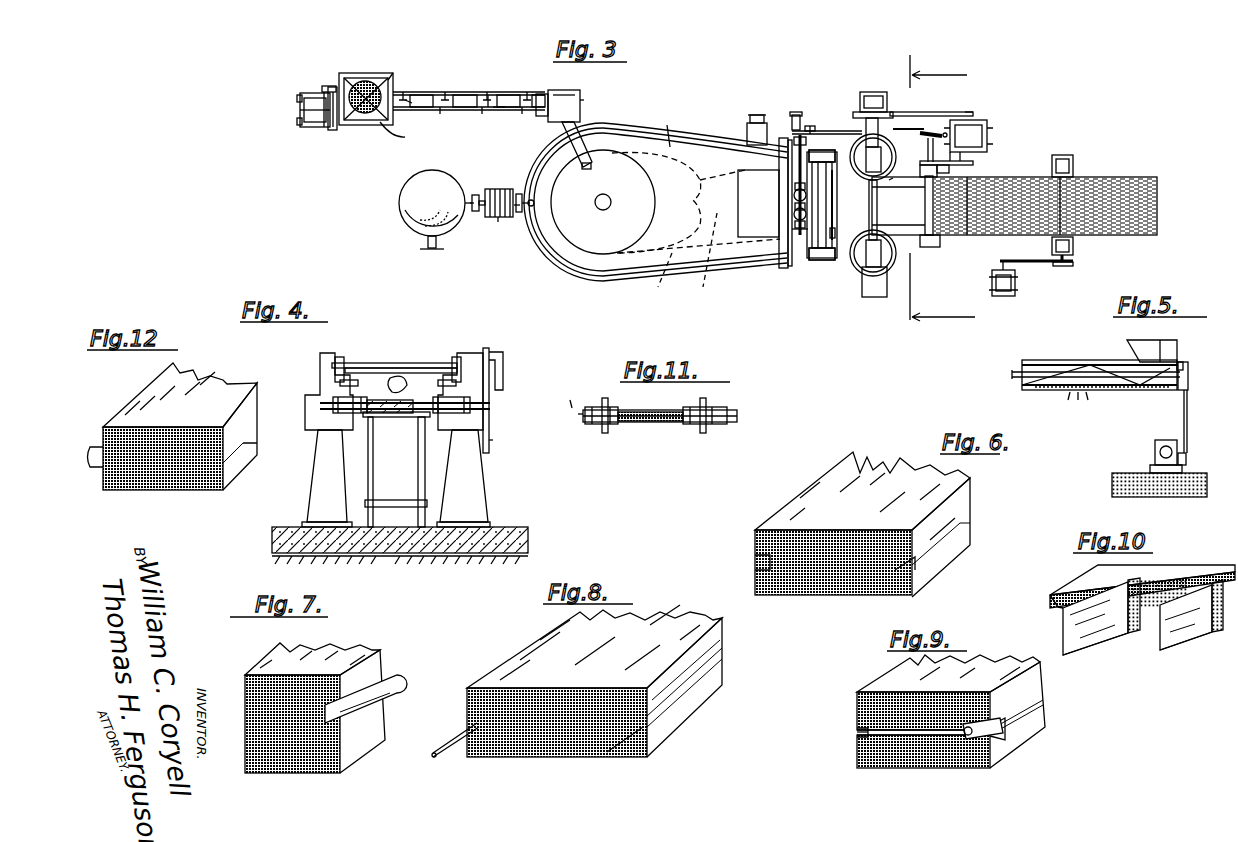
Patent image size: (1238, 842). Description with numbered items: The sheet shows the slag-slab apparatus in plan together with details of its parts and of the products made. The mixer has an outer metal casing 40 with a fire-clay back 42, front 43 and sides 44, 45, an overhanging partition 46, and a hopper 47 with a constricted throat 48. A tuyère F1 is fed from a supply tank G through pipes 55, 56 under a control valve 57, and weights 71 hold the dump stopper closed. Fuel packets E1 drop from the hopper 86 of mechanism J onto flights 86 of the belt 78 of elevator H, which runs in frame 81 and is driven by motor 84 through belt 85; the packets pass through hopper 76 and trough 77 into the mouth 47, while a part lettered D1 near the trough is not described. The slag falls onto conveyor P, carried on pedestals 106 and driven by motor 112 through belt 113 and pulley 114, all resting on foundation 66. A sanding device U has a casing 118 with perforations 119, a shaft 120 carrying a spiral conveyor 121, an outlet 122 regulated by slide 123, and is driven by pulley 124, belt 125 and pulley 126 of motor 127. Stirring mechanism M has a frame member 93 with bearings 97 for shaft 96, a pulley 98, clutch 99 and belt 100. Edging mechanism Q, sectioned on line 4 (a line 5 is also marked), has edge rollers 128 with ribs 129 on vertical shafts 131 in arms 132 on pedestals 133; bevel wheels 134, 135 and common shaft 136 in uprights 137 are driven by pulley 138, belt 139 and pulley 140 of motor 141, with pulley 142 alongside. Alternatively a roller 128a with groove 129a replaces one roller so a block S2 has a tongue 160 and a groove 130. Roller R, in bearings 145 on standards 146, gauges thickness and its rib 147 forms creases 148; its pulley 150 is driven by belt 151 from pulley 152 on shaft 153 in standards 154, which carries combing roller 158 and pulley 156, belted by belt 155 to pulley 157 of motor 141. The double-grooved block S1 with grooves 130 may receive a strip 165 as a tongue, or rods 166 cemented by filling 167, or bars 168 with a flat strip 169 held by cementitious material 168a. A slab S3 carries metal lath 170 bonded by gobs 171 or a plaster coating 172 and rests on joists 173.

In FIG. 3, the electric motor 84 is at (313, 128).
In FIG. 3, the belt 85 is at (329, 86).
In FIG. 3, the hopper mechanism J is at (368, 73).
In FIG. 3, the flights 86 is at (380, 82).
In FIG. 3, the elevator H is at (450, 91).
In FIG. 3, the belt 78 is at (490, 93).
In FIG. 3, the supporting frame 81 is at (492, 111).
In FIG. 3, the fuel packets E1 is at (421, 100).
In FIG. 3, the feed chute housing D' D1 is at (580, 92).
In FIG. 3, the hopper 76 is at (585, 100).
In FIG. 3, the trough 77 is at (592, 143).
In FIG. 3, the supply tank G is at (435, 209).
In FIG. 3, the pipe 56 is at (486, 192).
In FIG. 3, the pipe 55 is at (501, 189).
In FIG. 3, the weights 71 is at (500, 218).
In FIG. 3, the control valve 57 is at (477, 212).
In FIG. 3, the tuyère F1 is at (524, 222).
In FIG. 3, the outer metal casing 40 is at (612, 281).
In FIG. 3, the back 42 is at (557, 248).
In FIG. 3, the hopper 47 is at (636, 191).
In FIG. 3, the constricted throat 48 is at (600, 210).
In FIG. 3, the overhanging partition 46 is at (685, 190).
In FIG. 3, the front 43 is at (711, 255).
In FIG. 3, the side 45 is at (659, 280).
In FIG. 3, the side 44 is at (668, 127).
In FIG. 3, the sanding device U is at (746, 134).
In FIG. 5, the sanding device U is at (1050, 360).
In FIG. 3, the section line 5- 5 is at (787, 195).
In FIG. 3, the horizontal shaft 96 is at (797, 160).
In FIG. 3, the bearings 97 is at (797, 178).
In FIG. 3, the stirring mechanism M is at (794, 193).
In FIG. 3, the frame member 93 is at (794, 201).
In FIG. 3, the transverse roller R is at (837, 196).
In FIG. 3, the longitudinal rib 147 is at (837, 220).
In FIG. 3, the standards 146 is at (847, 233).
In FIG. 3, the bearings 145 is at (822, 152).
In FIG. 3, the free running pulley 98 is at (792, 115).
In FIG. 3, the clutch 99 is at (812, 131).
In FIG. 3, the driving pulley 150 is at (827, 118).
In FIG. 3, the belt 100 is at (820, 130).
In FIG. 3, the edge rollers 128 is at (862, 282).
In FIG. 4, the edge rollers 128 is at (330, 399).
In FIG. 11, the edge rollers 128 is at (720, 409).
In FIG. 3, the driving pulley 138 is at (888, 108).
In FIG. 4, the driving pulley 138 is at (496, 352).
In FIG. 3, the belt 139 is at (925, 112).
In FIG. 4, the belt 139 is at (493, 447).
In FIG. 3, the pulley 140 is at (972, 112).
In FIG. 3, the electric motor 141 is at (990, 137).
In FIG. 3, the belt 151 is at (911, 122).
In FIG. 3, the driving pulley 152 is at (939, 144).
In FIG. 3, the shaft 153 is at (930, 146).
In FIG. 3, the pulley 156 is at (919, 169).
In FIG. 3, the pulley 157 is at (975, 162).
In FIG. 3, the belt 155 is at (962, 165).
In FIG. 3, the standards 154 is at (930, 264).
In FIG. 3, the conveyor belt P is at (1032, 166).
In FIG. 3, the edge forming mechanism Q is at (892, 191).
In FIG. 4, the edge forming mechanism Q is at (394, 386).
In FIG. 3, the combing roller 158 is at (925, 201).
In FIG. 3, the crease 148 is at (1014, 206).
In FIG. 3, the pedestal 106 is at (1074, 158).
In FIG. 3, the belt 113 is at (1018, 260).
In FIG. 3, the driving pulley 114 is at (1069, 265).
In FIG. 3, the electric motor 112 is at (1015, 284).
In FIG. 3, the section line 4 is at (942, 194).
In FIG. 4, the concrete foundation 66 is at (388, 553).
In FIG. 5, the concrete foundation 66 is at (1168, 497).
In FIG. 4, the pedestals 133 is at (332, 485).
In FIG. 4, the arms 132 is at (436, 431).
In FIG. 4, the uprights 137 is at (320, 360).
In FIG. 4, the common driving shaft 136 is at (405, 363).
In FIG. 4, the bevel wheel 135 is at (341, 357).
In FIG. 4, the bevel wheel 134 is at (360, 368).
In FIG. 4, the vertical shafts 131 is at (352, 383).
In FIG. 4, the peripheral ribs 129 is at (482, 407).
In FIG. 11, the peripheral ribs 129 is at (740, 417).
In FIG. 4, the pulley 142 is at (495, 345).
In FIG. 12, the tongue and groove block S2 is at (195, 385).
In FIG. 12, the tongue 160 is at (88, 468).
In FIG. 12, the grooves 130 is at (256, 465).
In FIG. 6, the grooves 130 is at (768, 563).
In FIG. 9, the grooves 130 is at (858, 731).
In FIG. 11, the grooved roller 128a is at (590, 406).
In FIG. 11, the groove 129a is at (578, 416).
In FIG. 6, the double grooved slab S1 is at (890, 486).
In FIG. 7, the double grooved slab S1 is at (314, 653).
In FIG. 8, the double grooved slab S1 is at (640, 612).
In FIG. 9, the double grooved slab S1 is at (982, 646).
In FIG. 5, the cylindrical casing 118 is at (1038, 390).
In FIG. 5, the perforations 119 is at (1102, 400).
In FIG. 5, the spiral conveyor 121 is at (1064, 365).
In FIG. 5, the shaft 120 is at (1100, 365).
In FIG. 5, the outlet 122 is at (1148, 340).
In FIG. 5, the slide 123 is at (1183, 362).
In FIG. 5, the pulley 124 is at (1188, 377).
In FIG. 5, the belt 125 is at (1183, 414).
In FIG. 5, the electric motor 127 is at (1154, 452).
In FIG. 5, the driving pulley 126 is at (1194, 463).
In FIG. 10, the reinforced slab S3 is at (1160, 566).
In FIG. 10, the metal lath 170 is at (1062, 595).
In FIG. 10, the plaster coating 172 is at (1063, 625).
In FIG. 10, the gobs of cement mortar 171 is at (1191, 615).
In FIG. 10, the floor joists 173 is at (1173, 650).
In FIG. 7, the projecting strip 165 is at (380, 716).
In FIG. 8, the reinforcing rods 166 is at (436, 758).
In FIG. 8, the cement filling 167 is at (472, 723).
In FIG. 9, the reinforcing bars 168 is at (857, 752).
In FIG. 9, the cementitious material 168a is at (857, 727).
In FIG. 9, the flat strip 169 is at (1006, 732).